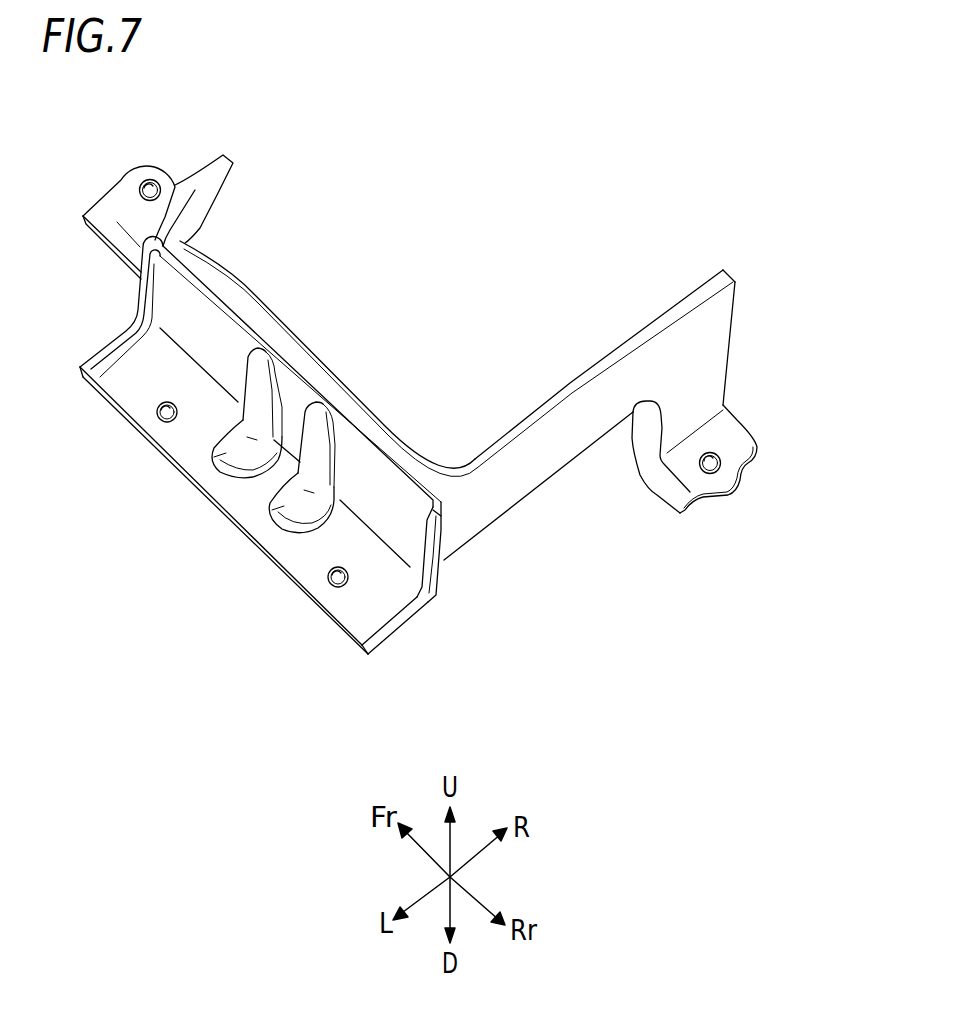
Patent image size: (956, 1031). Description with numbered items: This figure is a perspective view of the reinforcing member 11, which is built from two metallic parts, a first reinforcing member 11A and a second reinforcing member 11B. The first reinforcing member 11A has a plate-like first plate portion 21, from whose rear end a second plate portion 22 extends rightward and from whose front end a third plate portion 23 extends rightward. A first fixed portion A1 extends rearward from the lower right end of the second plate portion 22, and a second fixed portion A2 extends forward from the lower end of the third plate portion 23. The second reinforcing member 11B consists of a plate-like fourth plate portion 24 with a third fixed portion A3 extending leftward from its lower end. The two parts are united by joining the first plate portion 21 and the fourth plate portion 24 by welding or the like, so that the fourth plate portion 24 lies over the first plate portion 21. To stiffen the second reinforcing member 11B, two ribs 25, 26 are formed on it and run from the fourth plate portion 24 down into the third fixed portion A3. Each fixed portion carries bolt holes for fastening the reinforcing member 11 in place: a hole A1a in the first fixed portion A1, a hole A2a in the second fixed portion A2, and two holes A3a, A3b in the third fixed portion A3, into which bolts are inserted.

The reinforcing member 11 is at (522, 184).
The first reinforcing member 11A is at (670, 311).
The second reinforcing member 11B is at (437, 593).
The first plate portion 21 is at (313, 348).
The second plate portion 22 is at (567, 388).
The third plate portion 23 is at (225, 152).
The fourth plate portion 24 is at (200, 332).
The rib 25 is at (209, 470).
The rib 26 is at (278, 525).
The first fixed portion A1 is at (728, 438).
The hole A1a is at (702, 476).
The second fixed portion A2 is at (125, 198).
The hole A2a is at (147, 183).
The third fixed portion A3 is at (248, 497).
The hole A3a is at (338, 587).
The hole A3b is at (162, 421).